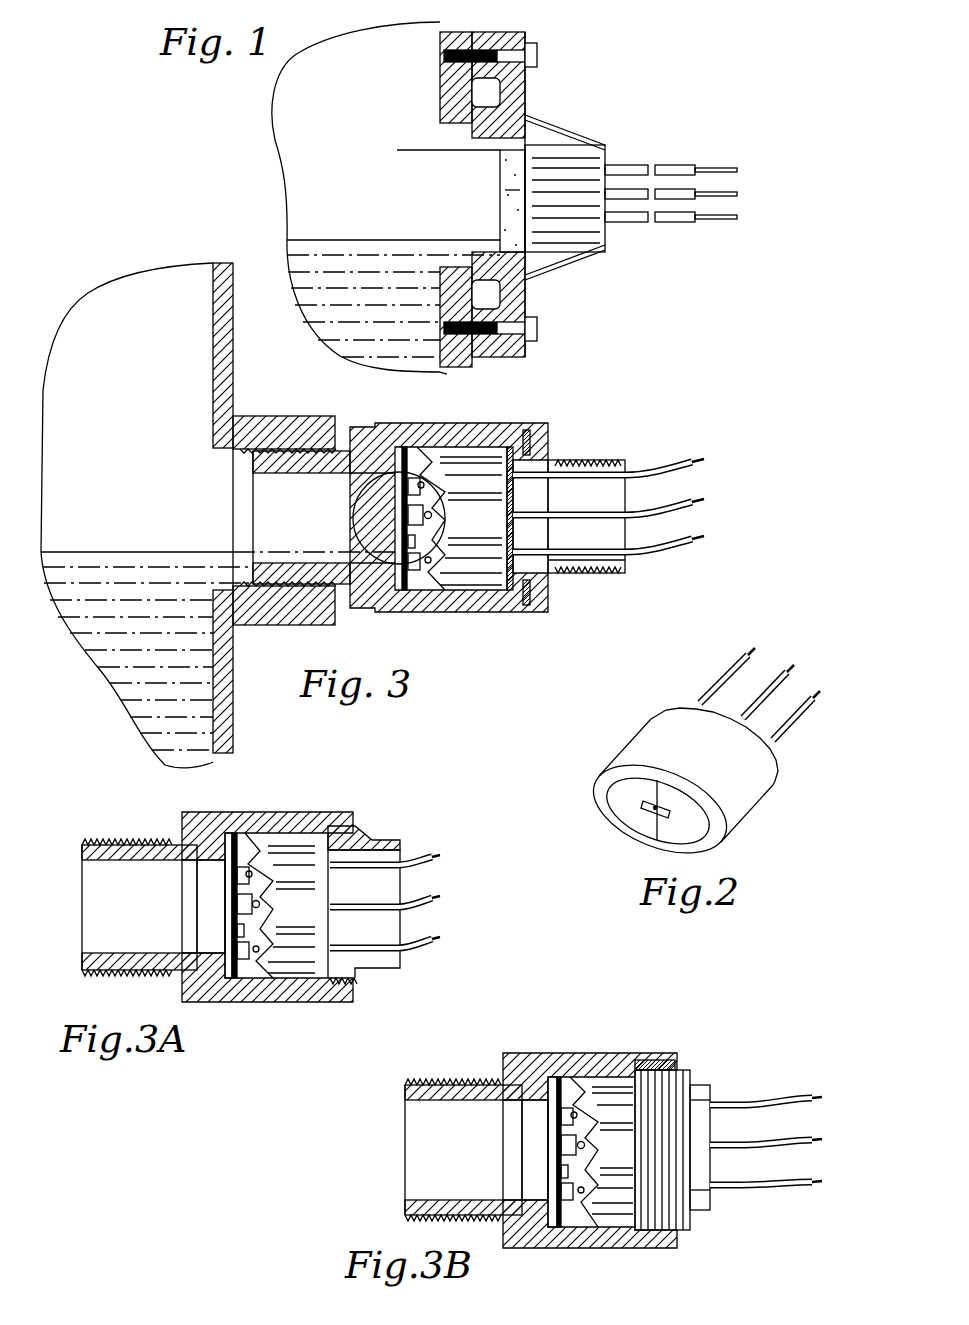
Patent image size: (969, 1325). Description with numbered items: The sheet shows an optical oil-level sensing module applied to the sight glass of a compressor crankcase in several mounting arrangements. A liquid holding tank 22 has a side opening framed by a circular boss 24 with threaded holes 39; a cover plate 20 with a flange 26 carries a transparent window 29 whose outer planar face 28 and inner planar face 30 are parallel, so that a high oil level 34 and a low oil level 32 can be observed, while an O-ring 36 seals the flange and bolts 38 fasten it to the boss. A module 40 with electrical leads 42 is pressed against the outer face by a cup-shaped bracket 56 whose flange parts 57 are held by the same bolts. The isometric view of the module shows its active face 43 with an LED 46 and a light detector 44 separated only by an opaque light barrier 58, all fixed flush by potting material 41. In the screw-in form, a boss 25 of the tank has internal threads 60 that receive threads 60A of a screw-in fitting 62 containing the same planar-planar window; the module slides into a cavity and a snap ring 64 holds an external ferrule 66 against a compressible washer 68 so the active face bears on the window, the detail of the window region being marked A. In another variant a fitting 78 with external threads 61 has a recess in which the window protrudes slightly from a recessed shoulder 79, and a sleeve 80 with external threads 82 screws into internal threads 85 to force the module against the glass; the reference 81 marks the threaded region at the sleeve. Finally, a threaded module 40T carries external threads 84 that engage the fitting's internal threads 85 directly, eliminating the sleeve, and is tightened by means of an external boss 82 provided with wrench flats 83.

In FIG. 1, the cover plate 20 is at (452, 129).
In FIG. 1, the liquid holding tank 22 is at (450, 374).
In FIG. 3, the liquid holding tank 22 is at (237, 352).
In FIG. 1, the circular boss 24 is at (447, 32).
In FIG. 3, the boss 25 is at (300, 416).
In FIG. 1, the flange 26 is at (505, 357).
In FIG. 1, the outer planar face 28 is at (527, 218).
In FIG. 1, the transparent window 29 is at (510, 160).
In FIG. 3, the transparent window 29 is at (380, 510).
In FIG. 3A, the transparent window 29 is at (208, 898).
In FIG. 3B, the transparent window 29 is at (533, 1130).
In FIG. 1, the inner planar face 30 is at (505, 203).
In FIG. 3A, the inner planar face 30 is at (200, 933).
In FIG. 3B, the inner planar face 30 is at (518, 1173).
In FIG. 1, the low oil level 32 is at (357, 240).
In FIG. 3, the low oil level 32 is at (175, 552).
In FIG. 1, the high oil level 34 is at (398, 150).
In FIG. 1, the O-ring 36 is at (490, 97).
In FIG. 1, the bolts 38 is at (540, 340).
In FIG. 1, the threaded holes 39 is at (463, 353).
In FIG. 1, the module 40 is at (580, 147).
In FIG. 3, the module 40 is at (480, 560).
In FIG. 2, the module 40 is at (733, 795).
In FIG. 3A, the module 40 is at (290, 968).
In FIG. 3B, the threaded module 40T is at (620, 1200).
In FIG. 2, the potting material 41 is at (633, 818).
In FIG. 1, the electrical leads 42 is at (665, 167).
In FIG. 3, the electrical leads 42 is at (663, 470).
In FIG. 2, the electrical leads 42 is at (793, 725).
In FIG. 3A, the electrical leads 42 is at (425, 858).
In FIG. 3B, the electrical leads 42 is at (773, 1195).
In FIG. 2, the active face 43 is at (603, 800).
In FIG. 3A, the active face 43 is at (234, 835).
In FIG. 2, the light detector 44 is at (652, 805).
In FIG. 2, the LED 46 is at (672, 808).
In FIG. 1, the bracket 56 is at (560, 123).
In FIG. 1, the flange parts 57 is at (527, 298).
In FIG. 2, the opaque light barrier 58 is at (650, 830).
In FIG. 3, the internal threads 60 is at (290, 586).
In FIG. 3, the threads 60A is at (313, 584).
In FIG. 3A, the external threads 61 is at (128, 840).
In FIG. 3B, the external threads 61 is at (450, 1080).
In FIG. 3, the screw-in fitting 62 is at (490, 613).
In FIG. 3, the snap ring 64 is at (533, 443).
In FIG. 3, the external ferrule 66 is at (565, 573).
In FIG. 3, the compressible washer 68 is at (518, 596).
In FIG. 3A, the fitting 78 is at (212, 1002).
In FIG. 3B, the fitting 78 is at (578, 1248).
In FIG. 3A, the recessed shoulder 79 is at (226, 838).
In FIG. 3A, the sleeve 80 is at (368, 843).
In FIG. 3A, the threads 81 is at (355, 978).
In FIG. 3B, the external threads 82 is at (712, 1092).
In FIG. 3B, the wrench flats 83 is at (700, 1200).
In FIG. 3B, the external threads 84 is at (680, 1072).
In FIG. 3A, the internal threads 85 is at (345, 828).
In FIG. 3B, the internal threads 85 is at (650, 1068).
In FIG. 3, the detail circle A is at (355, 518).